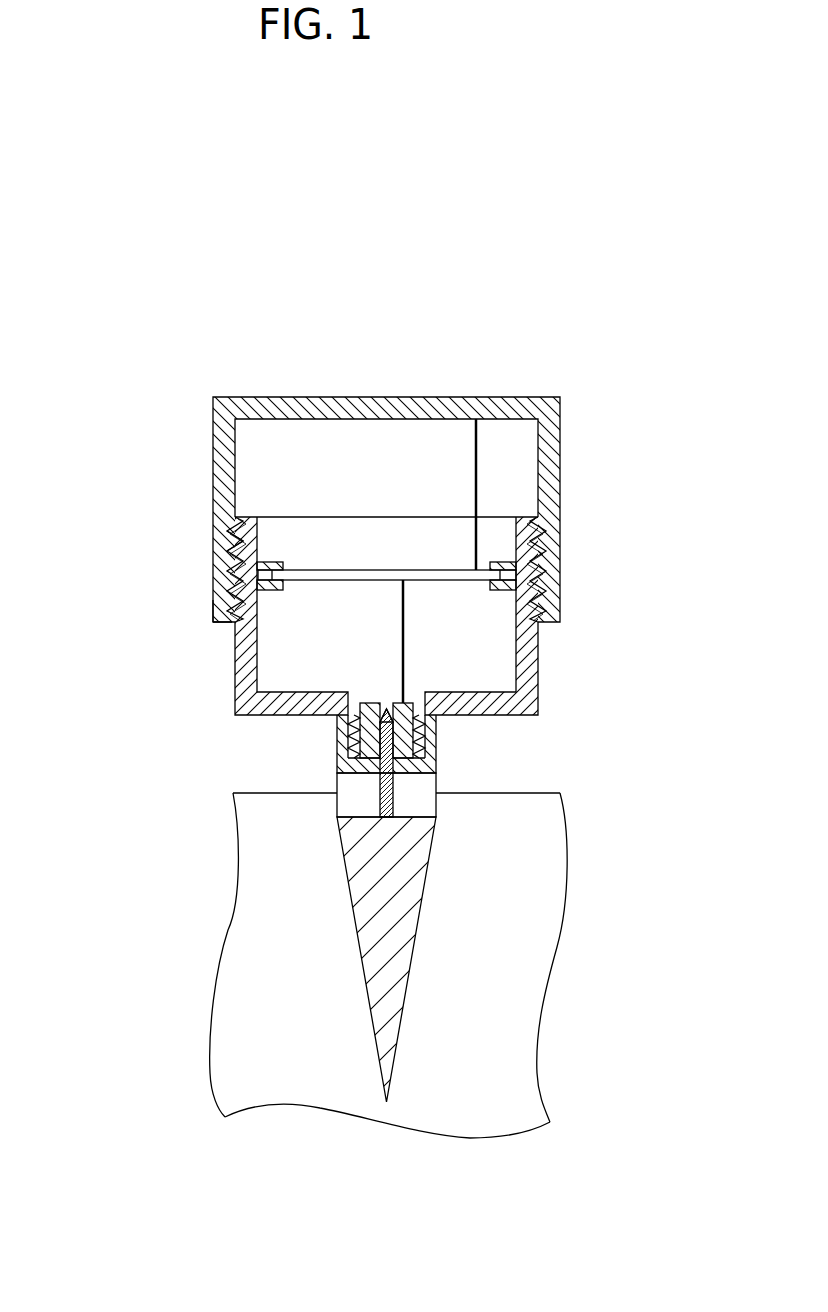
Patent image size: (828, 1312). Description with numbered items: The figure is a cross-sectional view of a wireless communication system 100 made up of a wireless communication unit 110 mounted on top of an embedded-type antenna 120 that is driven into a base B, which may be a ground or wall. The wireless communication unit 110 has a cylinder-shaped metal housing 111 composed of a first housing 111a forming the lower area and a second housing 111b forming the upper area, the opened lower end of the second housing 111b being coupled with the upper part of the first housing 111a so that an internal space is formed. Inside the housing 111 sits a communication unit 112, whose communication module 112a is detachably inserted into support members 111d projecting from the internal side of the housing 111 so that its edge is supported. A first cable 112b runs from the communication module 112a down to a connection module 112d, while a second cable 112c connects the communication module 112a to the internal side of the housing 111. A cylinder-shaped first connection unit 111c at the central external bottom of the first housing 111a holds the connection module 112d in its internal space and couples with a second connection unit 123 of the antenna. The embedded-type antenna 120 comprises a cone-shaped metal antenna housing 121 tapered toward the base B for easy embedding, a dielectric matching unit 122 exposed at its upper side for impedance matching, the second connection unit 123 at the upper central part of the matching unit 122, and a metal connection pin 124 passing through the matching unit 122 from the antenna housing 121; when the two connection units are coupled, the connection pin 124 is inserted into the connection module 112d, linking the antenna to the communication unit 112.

The wireless communication system 100 is at (183, 355).
The wireless communication unit 110 is at (677, 1205).
The housing 111 is at (95, 537).
The first housing 111a is at (242, 652).
The second housing 111b is at (218, 595).
The first connection unit 111c is at (337, 721).
The support member 111d is at (235, 552).
The communication unit 112 is at (678, 490).
The communication module 112a is at (482, 573).
The first cable 112b is at (403, 623).
The second cable 112c is at (477, 498).
The connection module 112d is at (392, 707).
The embedded-type antenna 120 is at (667, 735).
The antenna housing 121 is at (403, 932).
The matching unit 122 is at (427, 807).
The second connection unit 123 is at (437, 737).
The connection pin 124 is at (387, 797).
The base B is at (270, 876).